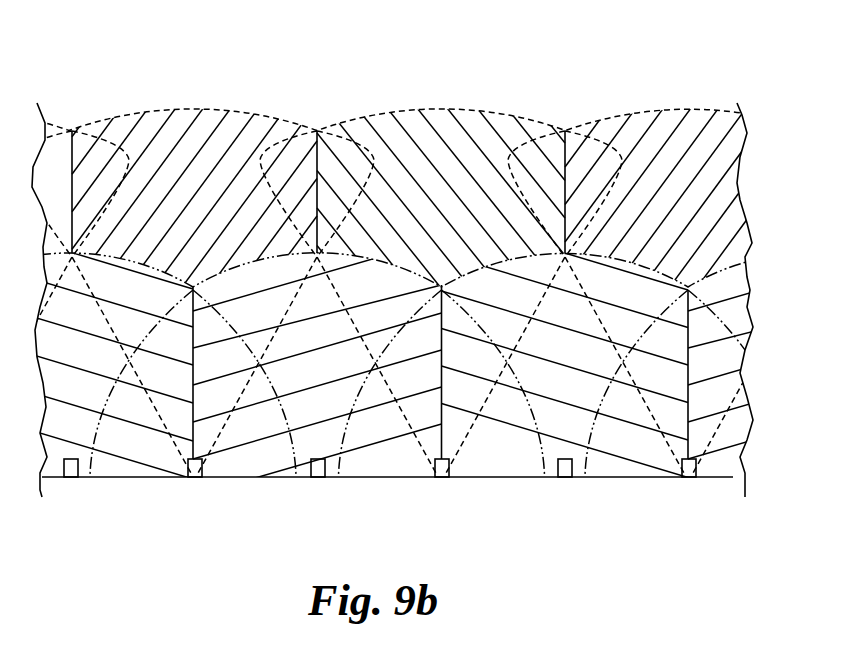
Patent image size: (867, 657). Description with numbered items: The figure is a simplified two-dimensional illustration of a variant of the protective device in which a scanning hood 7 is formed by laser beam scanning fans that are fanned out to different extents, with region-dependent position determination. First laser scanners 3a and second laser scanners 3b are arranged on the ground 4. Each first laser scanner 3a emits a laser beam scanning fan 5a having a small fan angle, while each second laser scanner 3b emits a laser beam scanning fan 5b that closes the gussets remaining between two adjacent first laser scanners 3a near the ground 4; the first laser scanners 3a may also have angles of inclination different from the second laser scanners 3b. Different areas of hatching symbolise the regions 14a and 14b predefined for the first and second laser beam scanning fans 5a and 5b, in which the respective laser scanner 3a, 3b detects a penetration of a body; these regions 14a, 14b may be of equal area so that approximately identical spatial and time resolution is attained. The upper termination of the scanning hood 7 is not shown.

The scanning hood 7 is at (552, 83).
The region 14a is at (160, 204).
The region 14b is at (51, 354).
The laser beam scanning fan 5a is at (155, 117).
The laser beam scanning fan 5b is at (117, 472).
The first laser scanner 3a is at (187, 477).
The second laser scanner 3b is at (65, 477).
The ground 4 is at (712, 477).